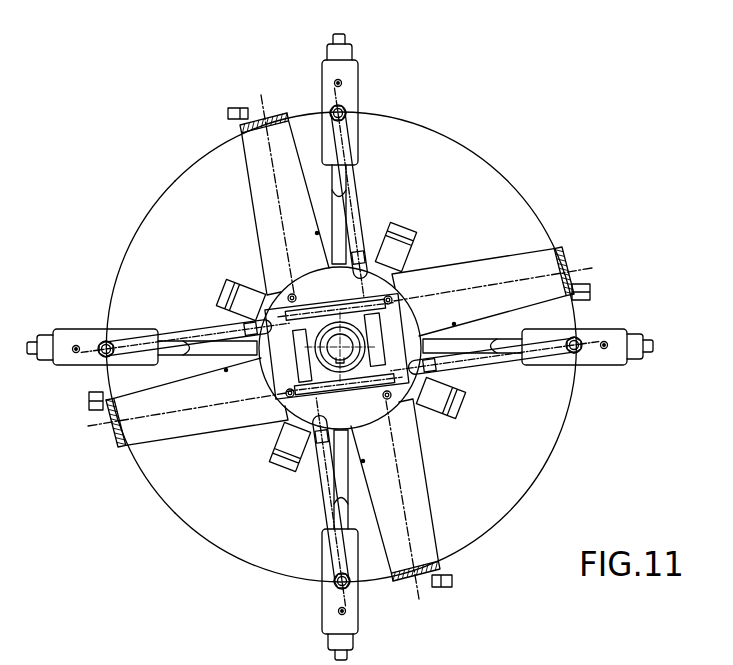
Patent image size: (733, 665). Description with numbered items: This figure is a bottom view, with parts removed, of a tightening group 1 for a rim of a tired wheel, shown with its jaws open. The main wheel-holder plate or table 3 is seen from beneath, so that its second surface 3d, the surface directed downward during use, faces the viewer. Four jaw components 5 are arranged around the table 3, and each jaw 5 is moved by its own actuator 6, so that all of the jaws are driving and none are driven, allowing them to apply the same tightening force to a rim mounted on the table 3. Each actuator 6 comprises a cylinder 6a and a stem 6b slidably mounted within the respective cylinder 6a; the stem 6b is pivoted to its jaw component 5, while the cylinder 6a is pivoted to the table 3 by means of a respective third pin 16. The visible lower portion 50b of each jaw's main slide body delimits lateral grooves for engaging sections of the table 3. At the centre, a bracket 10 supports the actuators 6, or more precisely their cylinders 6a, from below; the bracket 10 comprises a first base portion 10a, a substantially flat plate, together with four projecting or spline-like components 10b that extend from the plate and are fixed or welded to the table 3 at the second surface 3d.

The tightening group 1 is at (527, 127).
The main wheel-holder plate or table 3 is at (448, 148).
The second surface 3d is at (150, 230).
The jaw component 5 is at (358, 88).
The actuator 6 is at (247, 181).
The cylinder 6a is at (489, 258).
The stem 6b is at (362, 197).
The bracket 10 is at (287, 398).
The first base portion 10a is at (267, 364).
The projecting or spline-like component 10b is at (406, 236).
The third pin 16 is at (388, 392).
The lower portion 50b is at (72, 330).